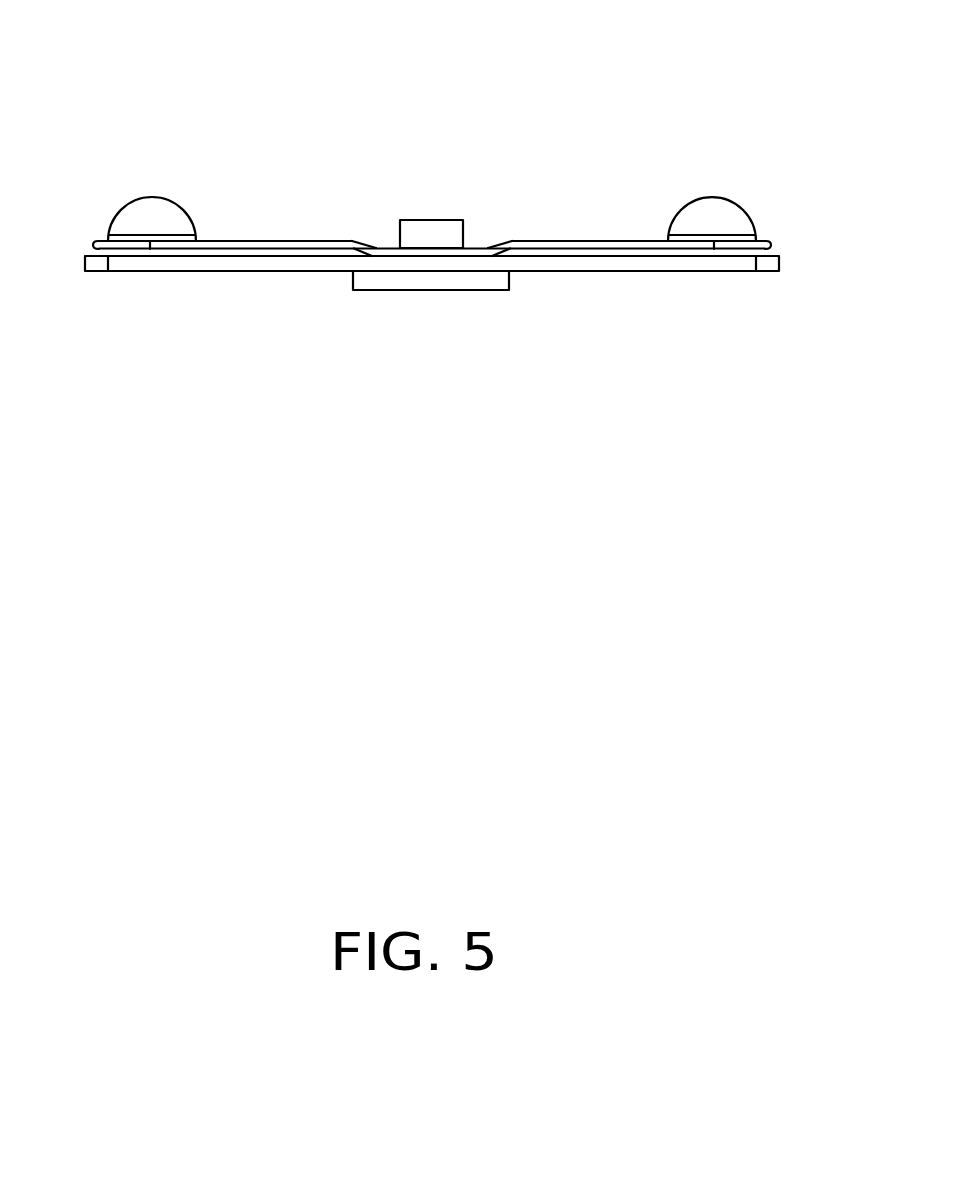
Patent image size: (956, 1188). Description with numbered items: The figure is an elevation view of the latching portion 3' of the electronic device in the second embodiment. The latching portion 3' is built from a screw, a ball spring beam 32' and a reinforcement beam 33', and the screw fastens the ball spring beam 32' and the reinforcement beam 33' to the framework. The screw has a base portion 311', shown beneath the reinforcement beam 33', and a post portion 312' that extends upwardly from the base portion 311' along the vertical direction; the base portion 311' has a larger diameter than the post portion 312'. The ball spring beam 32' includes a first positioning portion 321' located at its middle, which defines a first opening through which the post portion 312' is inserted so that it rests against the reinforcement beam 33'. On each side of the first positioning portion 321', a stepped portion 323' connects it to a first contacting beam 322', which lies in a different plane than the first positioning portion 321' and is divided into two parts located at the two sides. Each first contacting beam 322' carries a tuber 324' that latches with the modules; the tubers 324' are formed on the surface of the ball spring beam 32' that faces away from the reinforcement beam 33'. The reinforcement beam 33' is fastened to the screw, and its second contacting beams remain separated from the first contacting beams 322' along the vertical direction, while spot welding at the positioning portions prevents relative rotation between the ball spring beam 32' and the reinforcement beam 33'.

The latching portion 3' is at (438, 214).
The ball spring beam 32' is at (442, 155).
The first positioning portion 321' is at (432, 187).
The first contacting beam 322' is at (432, 185).
The stepped portion 323' is at (449, 189).
The tuber 324' is at (442, 181).
The post portion 312' is at (439, 196).
The base portion 311' is at (431, 345).
The reinforcement beam 33' is at (432, 314).